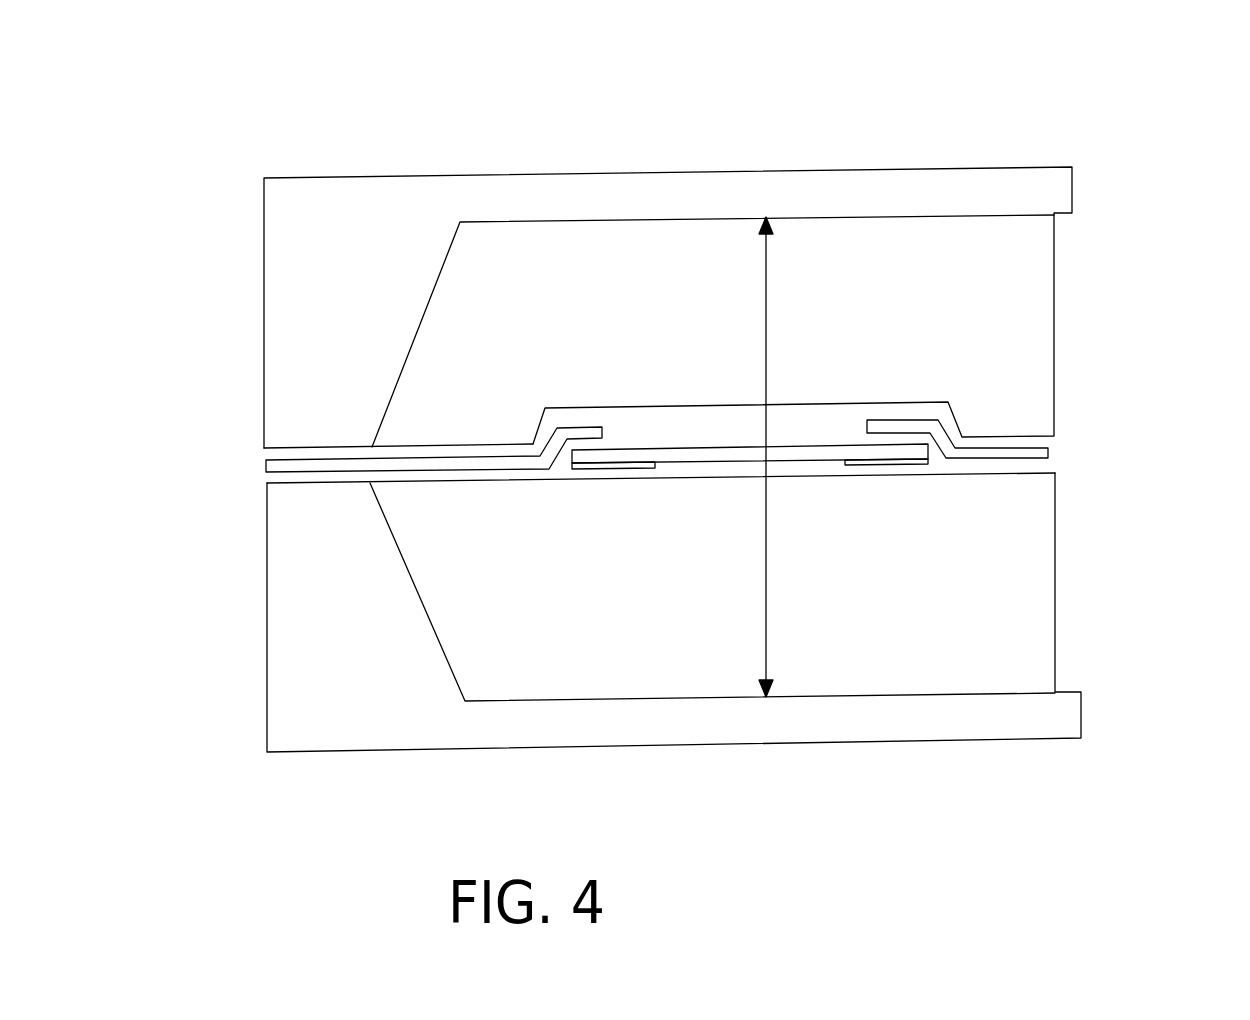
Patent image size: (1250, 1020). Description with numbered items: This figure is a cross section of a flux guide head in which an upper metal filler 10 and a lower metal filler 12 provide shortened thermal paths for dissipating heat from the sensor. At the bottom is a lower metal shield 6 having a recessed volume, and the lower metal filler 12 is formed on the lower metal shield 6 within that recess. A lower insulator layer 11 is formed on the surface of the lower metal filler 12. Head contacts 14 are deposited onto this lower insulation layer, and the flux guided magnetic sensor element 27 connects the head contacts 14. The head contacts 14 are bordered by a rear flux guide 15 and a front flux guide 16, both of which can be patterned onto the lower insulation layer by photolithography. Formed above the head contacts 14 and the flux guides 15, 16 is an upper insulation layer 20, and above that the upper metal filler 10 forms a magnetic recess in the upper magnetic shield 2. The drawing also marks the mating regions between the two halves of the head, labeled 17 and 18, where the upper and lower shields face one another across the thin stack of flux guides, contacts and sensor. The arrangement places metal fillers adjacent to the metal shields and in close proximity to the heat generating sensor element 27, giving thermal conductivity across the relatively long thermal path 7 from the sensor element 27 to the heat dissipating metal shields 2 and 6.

The upper magnetic shield 2 is at (403, 211).
The lower metal shield 6 is at (418, 702).
The thermal path 7 is at (766, 335).
The upper metal filler 10 is at (713, 331).
The lower insulator layer 11 is at (940, 462).
The lower metal filler 12 is at (712, 592).
The head contacts 14 is at (627, 469).
The rear flux guide 15 is at (1048, 447).
The front flux guide 16 is at (266, 473).
The upper body mating surface 17 is at (220, 437).
The lower body mating surface 18 is at (267, 483).
The upper insulation layer 20 is at (795, 425).
The flux guided magnetic sensor element 27 is at (695, 452).